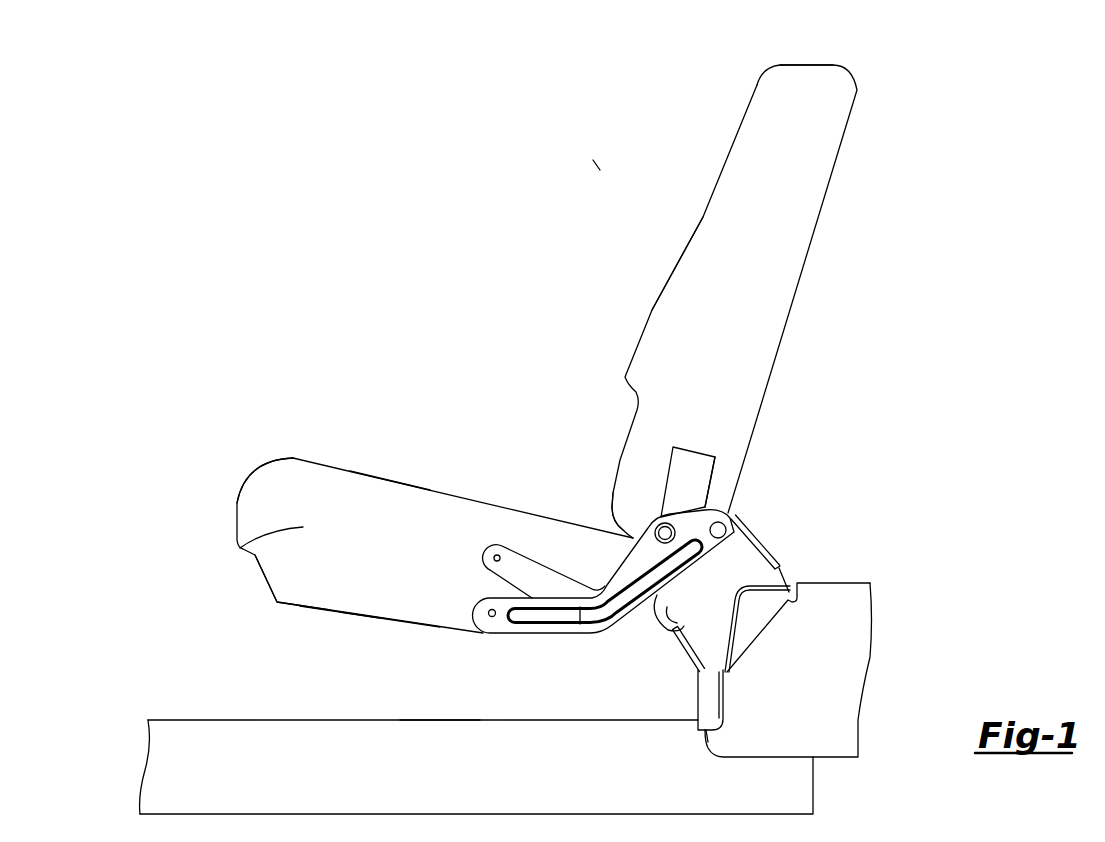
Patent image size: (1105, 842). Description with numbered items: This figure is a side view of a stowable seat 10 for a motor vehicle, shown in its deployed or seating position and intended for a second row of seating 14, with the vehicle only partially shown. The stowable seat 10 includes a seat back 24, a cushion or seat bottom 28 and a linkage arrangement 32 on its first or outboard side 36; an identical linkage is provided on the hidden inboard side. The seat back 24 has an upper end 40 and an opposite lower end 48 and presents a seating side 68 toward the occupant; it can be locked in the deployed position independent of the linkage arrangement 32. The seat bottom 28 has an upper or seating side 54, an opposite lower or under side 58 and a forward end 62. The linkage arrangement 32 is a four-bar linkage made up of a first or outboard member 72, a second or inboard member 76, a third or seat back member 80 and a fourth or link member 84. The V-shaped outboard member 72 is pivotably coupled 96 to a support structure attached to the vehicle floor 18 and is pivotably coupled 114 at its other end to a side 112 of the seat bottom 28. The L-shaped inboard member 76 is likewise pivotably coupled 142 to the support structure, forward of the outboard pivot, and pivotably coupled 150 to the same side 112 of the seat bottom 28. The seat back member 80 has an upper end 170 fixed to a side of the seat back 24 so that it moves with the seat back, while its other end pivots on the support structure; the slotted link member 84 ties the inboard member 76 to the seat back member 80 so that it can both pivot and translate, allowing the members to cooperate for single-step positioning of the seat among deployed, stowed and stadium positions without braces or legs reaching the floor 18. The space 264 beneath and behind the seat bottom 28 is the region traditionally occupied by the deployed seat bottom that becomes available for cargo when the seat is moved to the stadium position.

The stowable seat 10 is at (588, 155).
The second row of seating 14 is at (843, 448).
The floor 18 is at (180, 732).
The seat back 24 is at (757, 255).
The seat bottom 28 is at (310, 570).
The linkage arrangement 32 is at (642, 595).
The outboard side 36 is at (240, 548).
The upper end of seat back 40 is at (808, 63).
The lower end of seat back 48 is at (612, 522).
The seating side of seat bottom 54 is at (392, 480).
The under side of seat bottom 58 is at (367, 618).
The forward end of seat bottom 62 is at (240, 497).
The seating side of seat back 68 is at (700, 215).
The outboard member 72 is at (535, 630).
The inboard member 76 is at (510, 536).
The seat back member 80 is at (712, 480).
The link member 84 is at (658, 612).
The pivotable coupling 96 is at (728, 530).
The side of seat bottom 112 is at (337, 587).
The pivotable coupling 114 is at (492, 618).
The pivotable coupling 142 is at (656, 520).
The pivotable coupling 150 is at (493, 558).
The upper end of seat back member 170 is at (687, 447).
The space 264 is at (456, 706).